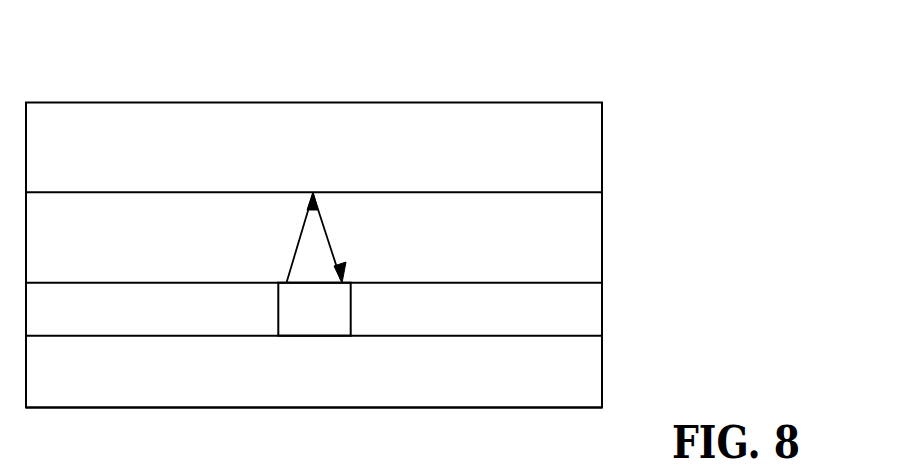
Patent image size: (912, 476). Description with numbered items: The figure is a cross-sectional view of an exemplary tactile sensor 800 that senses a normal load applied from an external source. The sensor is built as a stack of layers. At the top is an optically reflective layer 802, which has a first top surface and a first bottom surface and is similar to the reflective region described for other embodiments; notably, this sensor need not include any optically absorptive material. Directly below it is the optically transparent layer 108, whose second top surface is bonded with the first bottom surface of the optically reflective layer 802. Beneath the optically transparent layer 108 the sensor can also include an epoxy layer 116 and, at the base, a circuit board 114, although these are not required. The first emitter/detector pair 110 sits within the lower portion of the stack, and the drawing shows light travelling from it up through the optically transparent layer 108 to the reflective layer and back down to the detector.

The tactile sensor 800 is at (567, 65).
The optically reflective layer 802 is at (313, 122).
The optically transparent layer 108 is at (588, 240).
The epoxy layer 116 is at (583, 320).
The circuit board 114 is at (583, 392).
The first emitter/detector pair 110 is at (315, 325).